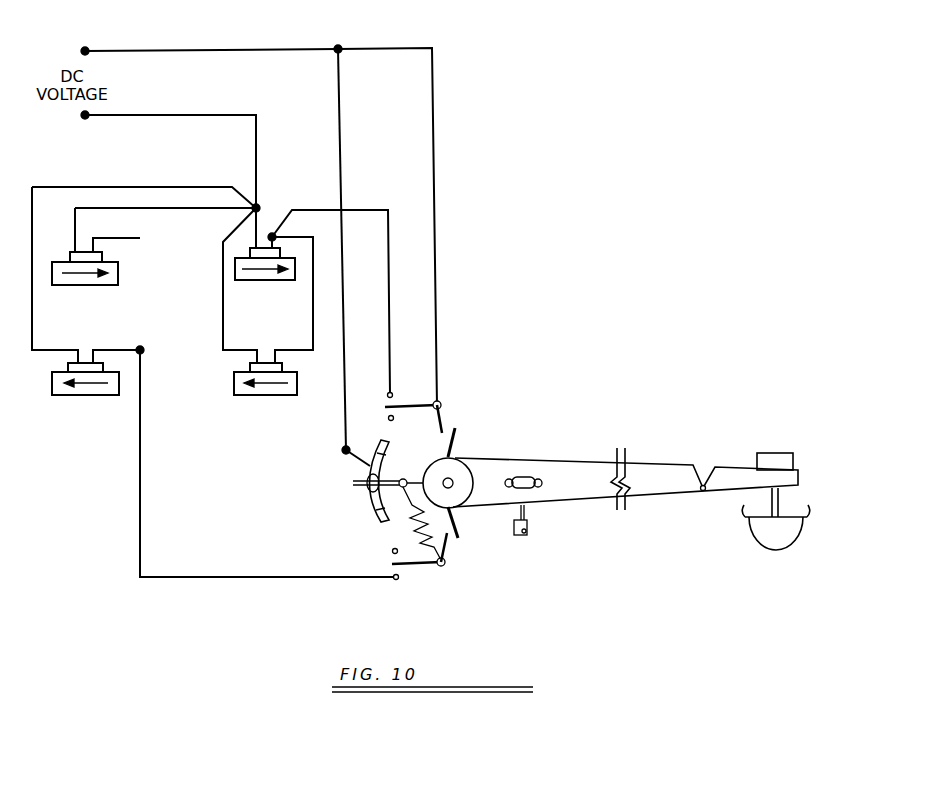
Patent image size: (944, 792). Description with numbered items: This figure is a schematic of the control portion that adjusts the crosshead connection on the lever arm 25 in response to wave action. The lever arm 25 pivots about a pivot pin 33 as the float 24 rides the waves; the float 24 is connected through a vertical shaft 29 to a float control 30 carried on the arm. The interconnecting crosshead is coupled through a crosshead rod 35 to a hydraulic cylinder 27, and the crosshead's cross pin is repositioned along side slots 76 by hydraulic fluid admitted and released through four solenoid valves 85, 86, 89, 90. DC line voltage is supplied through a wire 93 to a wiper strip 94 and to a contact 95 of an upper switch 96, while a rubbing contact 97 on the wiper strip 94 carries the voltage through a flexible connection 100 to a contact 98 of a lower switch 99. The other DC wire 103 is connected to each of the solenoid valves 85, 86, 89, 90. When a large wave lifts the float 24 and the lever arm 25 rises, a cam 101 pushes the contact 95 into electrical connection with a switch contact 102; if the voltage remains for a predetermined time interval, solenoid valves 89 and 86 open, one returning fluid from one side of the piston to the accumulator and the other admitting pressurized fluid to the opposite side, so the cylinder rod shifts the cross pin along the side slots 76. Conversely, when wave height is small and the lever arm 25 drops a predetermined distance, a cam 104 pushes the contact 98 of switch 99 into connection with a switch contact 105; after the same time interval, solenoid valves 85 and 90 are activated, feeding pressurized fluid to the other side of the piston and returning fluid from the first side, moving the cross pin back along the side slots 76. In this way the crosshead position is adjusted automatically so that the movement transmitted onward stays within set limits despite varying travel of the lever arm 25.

The float 24 is at (750, 538).
The lever arm 25 is at (590, 460).
The hydraulic cylinder 27 is at (528, 532).
The vertical shaft 29 is at (781, 499).
The float control 30 is at (773, 453).
The pivot pin 33 is at (452, 479).
The crosshead rod 35 is at (526, 511).
The side slots 76 is at (537, 477).
The solenoid valve 85 is at (85, 286).
The solenoid valve 86 is at (265, 281).
The solenoid valve 89 is at (265, 396).
The solenoid valve 90 is at (85, 396).
The wire 93 is at (265, 50).
The wiper strip 94 is at (372, 506).
The contact 95 is at (412, 406).
The switch 96 is at (455, 397).
The rubbing contact 97 is at (364, 478).
The contact 98 is at (418, 566).
The switch 99 is at (449, 567).
The flexible connection 100 is at (420, 530).
The cam 101 is at (457, 437).
The switch contact 102 is at (387, 395).
The wire 103 is at (213, 115).
The cam 104 is at (459, 524).
The switch contact 105 is at (269, 479).